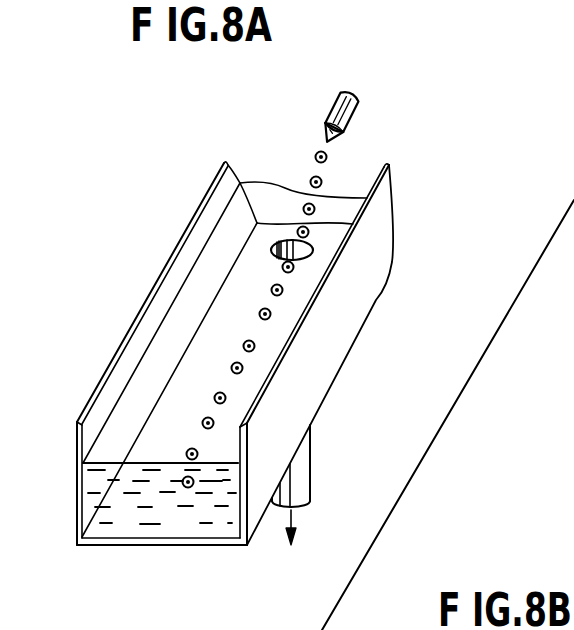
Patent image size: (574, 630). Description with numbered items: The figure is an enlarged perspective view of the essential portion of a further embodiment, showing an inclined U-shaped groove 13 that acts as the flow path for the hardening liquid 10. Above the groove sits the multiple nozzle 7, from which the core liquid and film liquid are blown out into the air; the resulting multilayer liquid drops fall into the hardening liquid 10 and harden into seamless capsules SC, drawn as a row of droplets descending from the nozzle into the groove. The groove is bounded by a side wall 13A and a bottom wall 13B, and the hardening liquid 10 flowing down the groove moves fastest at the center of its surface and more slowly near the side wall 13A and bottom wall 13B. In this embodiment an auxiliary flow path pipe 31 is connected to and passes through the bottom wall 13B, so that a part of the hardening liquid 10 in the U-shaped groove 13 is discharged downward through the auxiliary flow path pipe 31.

The multiple nozzle 7 is at (362, 108).
The U-shaped groove 13 is at (285, 396).
The side wall 13A is at (358, 304).
The bottom wall 13B is at (183, 548).
The hardening liquid 10 is at (132, 498).
The seamless capsule SC is at (255, 347).
The auxiliary flow path pipe 31 is at (312, 463).